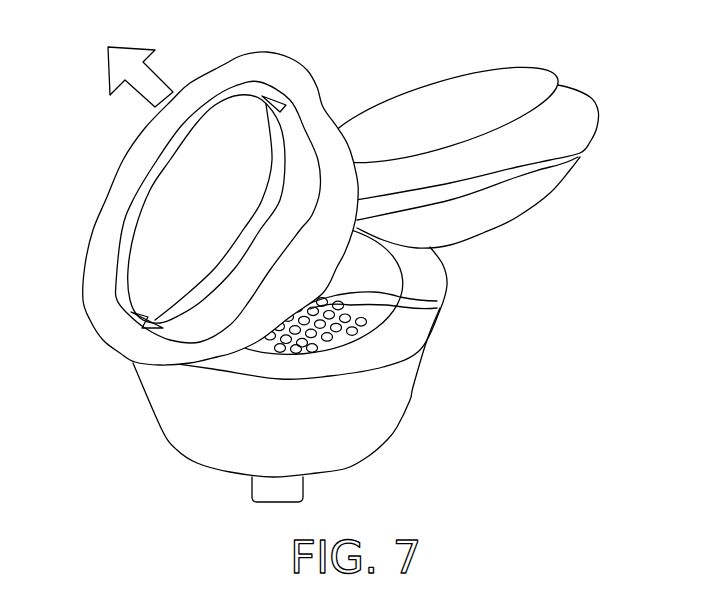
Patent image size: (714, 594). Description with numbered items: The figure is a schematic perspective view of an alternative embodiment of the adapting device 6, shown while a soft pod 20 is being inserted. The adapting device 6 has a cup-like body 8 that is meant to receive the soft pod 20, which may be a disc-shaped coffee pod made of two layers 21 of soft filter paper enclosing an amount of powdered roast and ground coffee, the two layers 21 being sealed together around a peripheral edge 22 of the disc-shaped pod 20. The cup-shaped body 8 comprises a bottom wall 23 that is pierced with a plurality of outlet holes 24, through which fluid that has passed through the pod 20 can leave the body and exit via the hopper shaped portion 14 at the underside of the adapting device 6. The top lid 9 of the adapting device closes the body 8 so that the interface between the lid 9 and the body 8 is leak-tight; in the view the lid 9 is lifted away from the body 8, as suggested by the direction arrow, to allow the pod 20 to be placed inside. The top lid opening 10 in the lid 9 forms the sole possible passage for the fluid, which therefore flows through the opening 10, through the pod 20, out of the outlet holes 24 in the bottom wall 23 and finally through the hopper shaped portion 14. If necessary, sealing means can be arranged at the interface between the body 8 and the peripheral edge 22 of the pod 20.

The adapting device 6 is at (320, 360).
The cup-like body 8 is at (289, 432).
The top lid 9 is at (214, 213).
The top lid opening 10 is at (197, 208).
The hopper shaped portion 14 is at (300, 487).
The soft pod 20 is at (492, 147).
The layers of soft filter paper 21 is at (503, 80).
The peripheral edge 22 is at (577, 95).
The bottom wall 23 is at (420, 349).
The outlet holes 24 is at (437, 308).